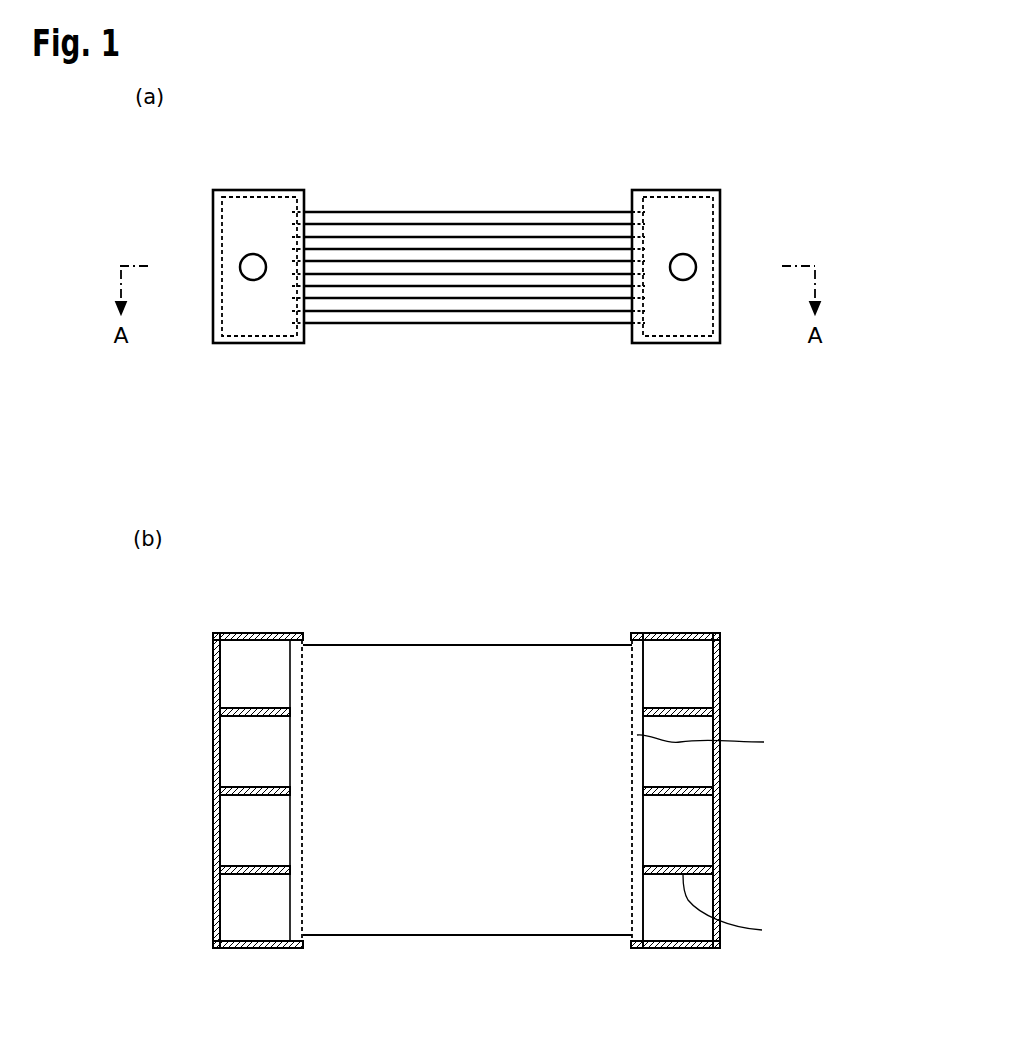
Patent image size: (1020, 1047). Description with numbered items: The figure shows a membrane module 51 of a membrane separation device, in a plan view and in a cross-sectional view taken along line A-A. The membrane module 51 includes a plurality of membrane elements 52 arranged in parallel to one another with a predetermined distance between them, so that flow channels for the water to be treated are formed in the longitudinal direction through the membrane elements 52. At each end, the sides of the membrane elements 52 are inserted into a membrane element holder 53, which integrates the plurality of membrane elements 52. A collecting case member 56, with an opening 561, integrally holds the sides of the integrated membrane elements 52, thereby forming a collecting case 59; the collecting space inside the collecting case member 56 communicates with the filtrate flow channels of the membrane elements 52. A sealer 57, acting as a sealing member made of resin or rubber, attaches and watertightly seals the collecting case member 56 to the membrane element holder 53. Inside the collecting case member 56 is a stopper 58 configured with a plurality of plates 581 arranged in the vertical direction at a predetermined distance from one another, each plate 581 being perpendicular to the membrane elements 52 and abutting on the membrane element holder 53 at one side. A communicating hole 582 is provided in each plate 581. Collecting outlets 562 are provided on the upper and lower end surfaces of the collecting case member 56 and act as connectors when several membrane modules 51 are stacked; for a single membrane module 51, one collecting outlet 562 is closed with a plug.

The membrane module 51 is at (468, 554).
The membrane element 52 is at (417, 318).
The membrane element holder 53 is at (716, 744).
The collecting case member 56 is at (664, 190).
The sealer 57 is at (628, 943).
The stopper 58 is at (539, 826).
The collecting case 59 is at (535, 569).
The opening 561 is at (630, 638).
The collecting outlet 562 is at (697, 264).
The plate 581 is at (706, 794).
The communicating hole 582 is at (742, 910).